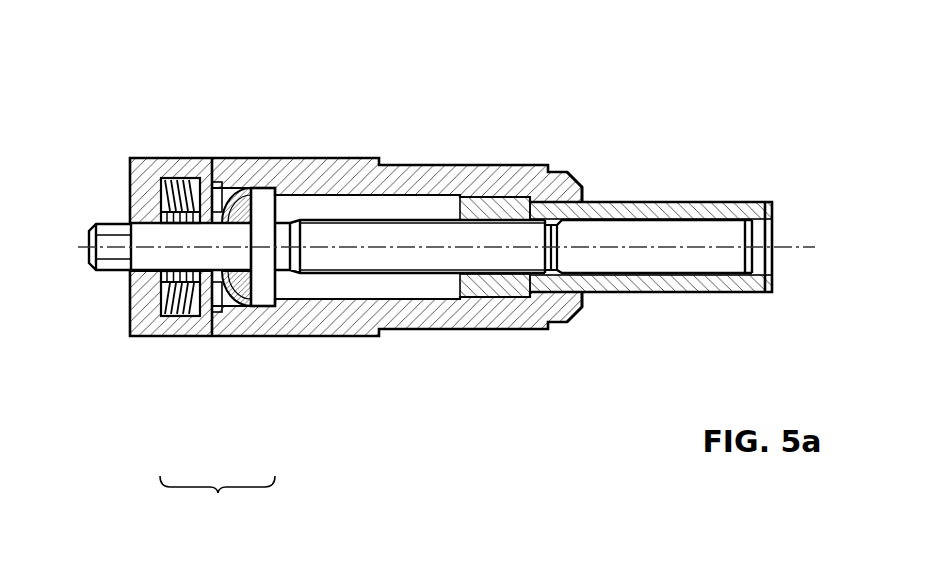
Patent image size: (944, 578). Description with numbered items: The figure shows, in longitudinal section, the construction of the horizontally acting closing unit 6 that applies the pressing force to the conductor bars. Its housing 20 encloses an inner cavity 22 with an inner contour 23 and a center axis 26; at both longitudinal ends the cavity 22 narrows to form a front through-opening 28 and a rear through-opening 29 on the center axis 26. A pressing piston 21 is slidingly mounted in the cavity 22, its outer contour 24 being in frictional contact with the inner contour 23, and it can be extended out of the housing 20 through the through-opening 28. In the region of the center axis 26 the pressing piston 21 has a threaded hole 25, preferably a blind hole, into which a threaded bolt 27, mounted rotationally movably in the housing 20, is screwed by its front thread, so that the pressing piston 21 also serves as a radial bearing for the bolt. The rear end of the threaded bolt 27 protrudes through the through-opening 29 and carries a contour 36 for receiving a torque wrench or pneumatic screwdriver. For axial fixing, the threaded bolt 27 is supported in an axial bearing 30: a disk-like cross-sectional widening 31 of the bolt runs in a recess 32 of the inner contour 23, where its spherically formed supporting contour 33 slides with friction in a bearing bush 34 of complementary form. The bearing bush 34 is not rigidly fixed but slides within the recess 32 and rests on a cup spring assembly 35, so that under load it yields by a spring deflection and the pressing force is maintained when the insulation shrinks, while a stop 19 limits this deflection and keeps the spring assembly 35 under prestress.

The closing unit 6 is at (492, 398).
The stop 19 is at (219, 179).
The housing 20 is at (307, 177).
The pressing piston 21 is at (688, 210).
The inner cavity 22 is at (388, 207).
The inner contour 23 is at (428, 201).
The outer contour 24 is at (497, 192).
The threaded hole 25 is at (553, 217).
The center axis 26 is at (800, 243).
The threaded bolt 27 is at (332, 235).
The through-opening 28 is at (590, 196).
The through-opening 29 is at (128, 215).
The axial bearing 30 is at (217, 500).
The disk-like cross-sectional widening 31 is at (263, 282).
The recess 32 is at (249, 312).
The spherically formed supporting contour 33 is at (237, 283).
The bearing bush 34 is at (223, 297).
The cup spring assembly 35 is at (170, 318).
The contour for receiving a tool 36 is at (111, 264).